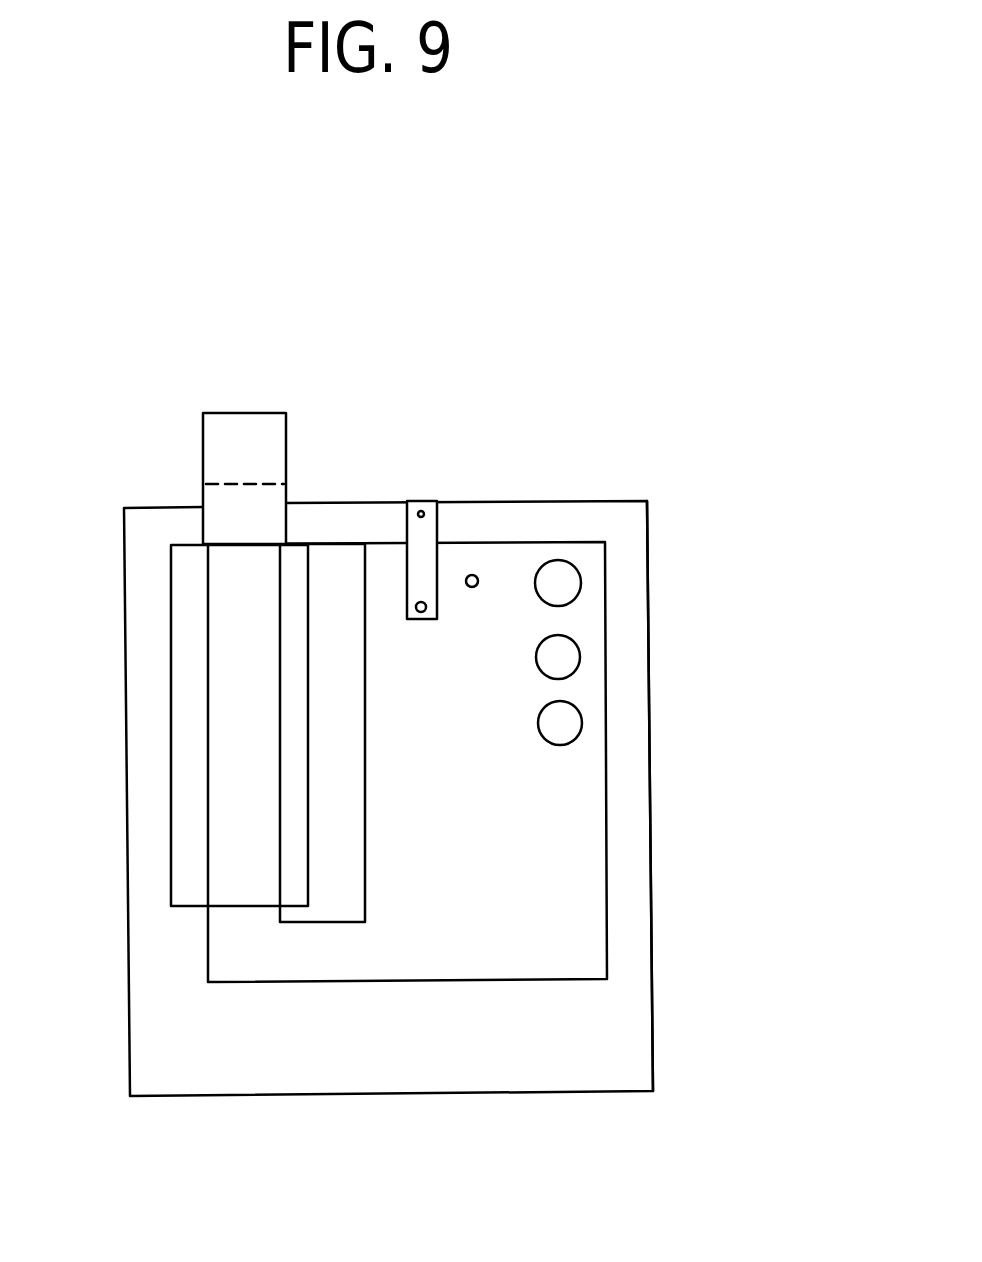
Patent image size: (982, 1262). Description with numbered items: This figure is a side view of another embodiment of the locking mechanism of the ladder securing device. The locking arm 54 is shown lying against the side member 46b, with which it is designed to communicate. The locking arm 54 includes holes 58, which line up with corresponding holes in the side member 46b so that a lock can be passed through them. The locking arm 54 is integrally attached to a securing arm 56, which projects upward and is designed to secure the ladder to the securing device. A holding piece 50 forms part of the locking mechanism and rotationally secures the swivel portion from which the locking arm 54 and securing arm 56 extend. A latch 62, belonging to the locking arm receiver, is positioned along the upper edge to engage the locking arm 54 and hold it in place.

The holding piece 50 is at (123, 857).
The second side piece 46b is at (653, 1006).
The locking arm 54 is at (422, 982).
The securing arm 56 is at (250, 442).
The latch 62 is at (437, 527).
The holes 58 is at (572, 703).